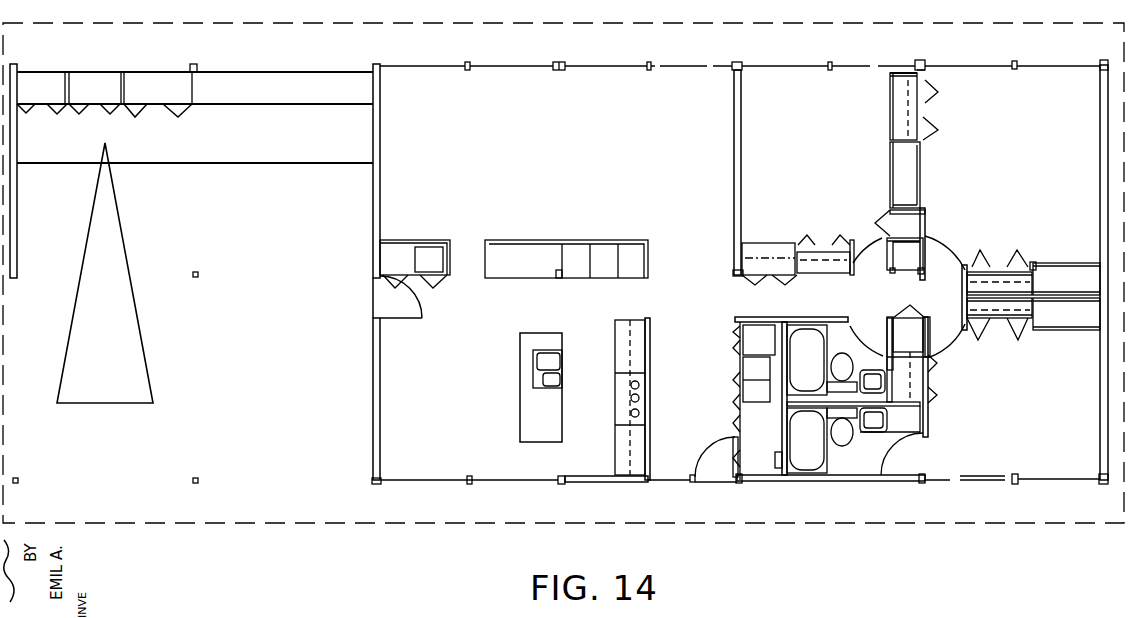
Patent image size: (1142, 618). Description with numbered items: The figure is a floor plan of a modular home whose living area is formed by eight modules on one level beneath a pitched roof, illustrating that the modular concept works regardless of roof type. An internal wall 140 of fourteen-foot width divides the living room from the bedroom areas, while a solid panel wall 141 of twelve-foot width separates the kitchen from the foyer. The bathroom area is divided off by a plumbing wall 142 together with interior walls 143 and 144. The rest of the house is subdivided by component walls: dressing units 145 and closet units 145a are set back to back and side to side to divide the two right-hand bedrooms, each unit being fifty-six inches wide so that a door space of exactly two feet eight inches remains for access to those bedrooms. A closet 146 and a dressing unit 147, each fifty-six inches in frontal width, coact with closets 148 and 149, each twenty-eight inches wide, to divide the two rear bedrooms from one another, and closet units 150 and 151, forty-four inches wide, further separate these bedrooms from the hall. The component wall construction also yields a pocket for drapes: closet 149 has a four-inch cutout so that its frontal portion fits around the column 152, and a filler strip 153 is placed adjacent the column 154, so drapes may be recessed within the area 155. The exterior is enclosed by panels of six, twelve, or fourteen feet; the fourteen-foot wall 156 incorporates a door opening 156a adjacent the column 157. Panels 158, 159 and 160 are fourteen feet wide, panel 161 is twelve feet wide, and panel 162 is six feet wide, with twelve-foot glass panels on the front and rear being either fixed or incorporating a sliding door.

The internal wall 140 is at (740, 185).
The solid panel wall 141 is at (646, 392).
The plumbing wall 142 is at (866, 400).
The interior wall 143 is at (797, 315).
The interior wall 144 is at (782, 415).
The dressing unit 145 is at (1070, 267).
The closet unit 145a is at (998, 270).
The closet 146 is at (913, 112).
The dressing unit 147 is at (913, 173).
The closet 148 is at (920, 225).
The closet 149 is at (897, 270).
The closet unit 150 is at (767, 252).
The closet unit 151 is at (822, 253).
The column 152 is at (921, 275).
The filler strip 153 is at (922, 72).
The column 154 is at (925, 65).
The drape pocket area 155 is at (898, 73).
The exterior wall 156 is at (381, 425).
The door opening 156a is at (400, 320).
The column 157 is at (375, 276).
The exterior panel 158 is at (380, 200).
The exterior panel 159 is at (1103, 165).
The exterior panel 160 is at (1103, 385).
The exterior panel 161 is at (838, 481).
The exterior panel 162 is at (587, 482).